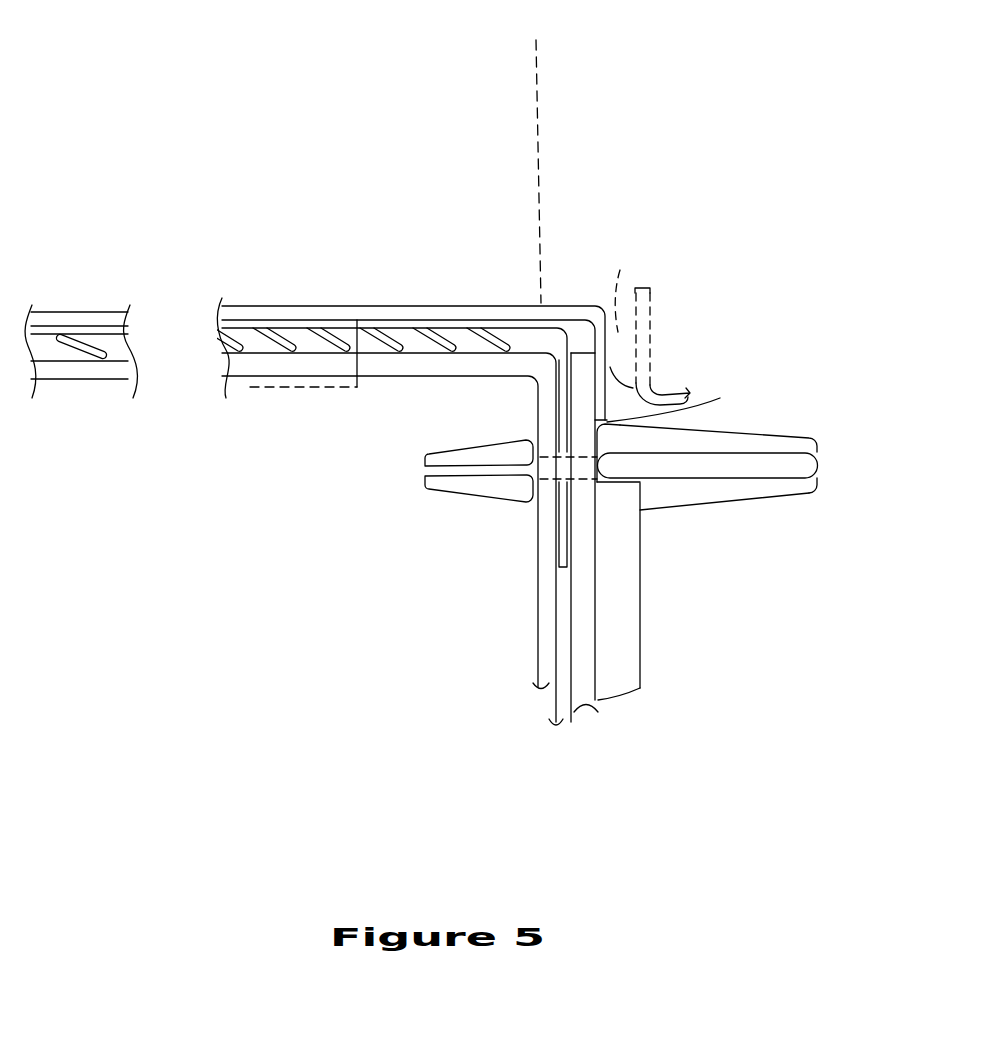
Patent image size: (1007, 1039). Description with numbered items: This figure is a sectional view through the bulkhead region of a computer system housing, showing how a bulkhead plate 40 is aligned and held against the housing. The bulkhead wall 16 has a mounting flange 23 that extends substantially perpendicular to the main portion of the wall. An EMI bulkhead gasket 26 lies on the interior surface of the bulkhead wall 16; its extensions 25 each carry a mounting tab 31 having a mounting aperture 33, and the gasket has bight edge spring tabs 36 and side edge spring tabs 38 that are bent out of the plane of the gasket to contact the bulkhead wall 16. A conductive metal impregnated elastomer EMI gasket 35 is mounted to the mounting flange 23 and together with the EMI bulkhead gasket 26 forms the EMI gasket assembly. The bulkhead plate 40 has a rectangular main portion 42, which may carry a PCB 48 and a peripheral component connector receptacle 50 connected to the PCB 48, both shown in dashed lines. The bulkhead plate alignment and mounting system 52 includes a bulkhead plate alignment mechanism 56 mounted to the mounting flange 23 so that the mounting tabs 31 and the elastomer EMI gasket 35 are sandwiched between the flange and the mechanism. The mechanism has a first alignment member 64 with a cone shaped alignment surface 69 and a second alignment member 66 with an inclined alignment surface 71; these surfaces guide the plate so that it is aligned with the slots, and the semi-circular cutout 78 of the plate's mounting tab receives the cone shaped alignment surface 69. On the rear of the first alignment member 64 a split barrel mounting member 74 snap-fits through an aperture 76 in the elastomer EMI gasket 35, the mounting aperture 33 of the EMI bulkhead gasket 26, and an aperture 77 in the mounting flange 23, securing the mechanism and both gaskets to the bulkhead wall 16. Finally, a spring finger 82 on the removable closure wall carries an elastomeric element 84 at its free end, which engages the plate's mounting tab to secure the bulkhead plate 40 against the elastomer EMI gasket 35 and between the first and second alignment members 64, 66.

The bulkhead wall 16 is at (108, 374).
The mounting flange 23 is at (543, 612).
The extension 25 is at (452, 326).
The EMI bulkhead gasket 26 is at (41, 318).
The mounting tab 31 is at (565, 548).
The mounting aperture 33 is at (557, 444).
The elastomer EMI gasket 35 is at (586, 660).
The bight edge spring tab 36 is at (75, 345).
The side edge spring tab 38 is at (338, 342).
The bulkhead plate 40 is at (553, 298).
The main portion 42 is at (77, 327).
The PCB 48 is at (503, 110).
The peripheral component connector receptacle 50 is at (308, 387).
The bulkhead plate alignment and mounting system 52 is at (771, 426).
The bulkhead plate alignment mechanism 56 is at (651, 616).
The first alignment member 64 is at (778, 488).
The second alignment member 66 is at (805, 463).
The cone shaped alignment surface 69 is at (723, 423).
The inclined alignment surface 71 is at (747, 475).
The split barrel mounting member 74 is at (455, 488).
The aperture 76 is at (583, 483).
The aperture 77 is at (547, 482).
The semi-circular cutout 78 is at (712, 430).
The spring finger 82 is at (655, 325).
The elastomeric element 84 is at (618, 292).